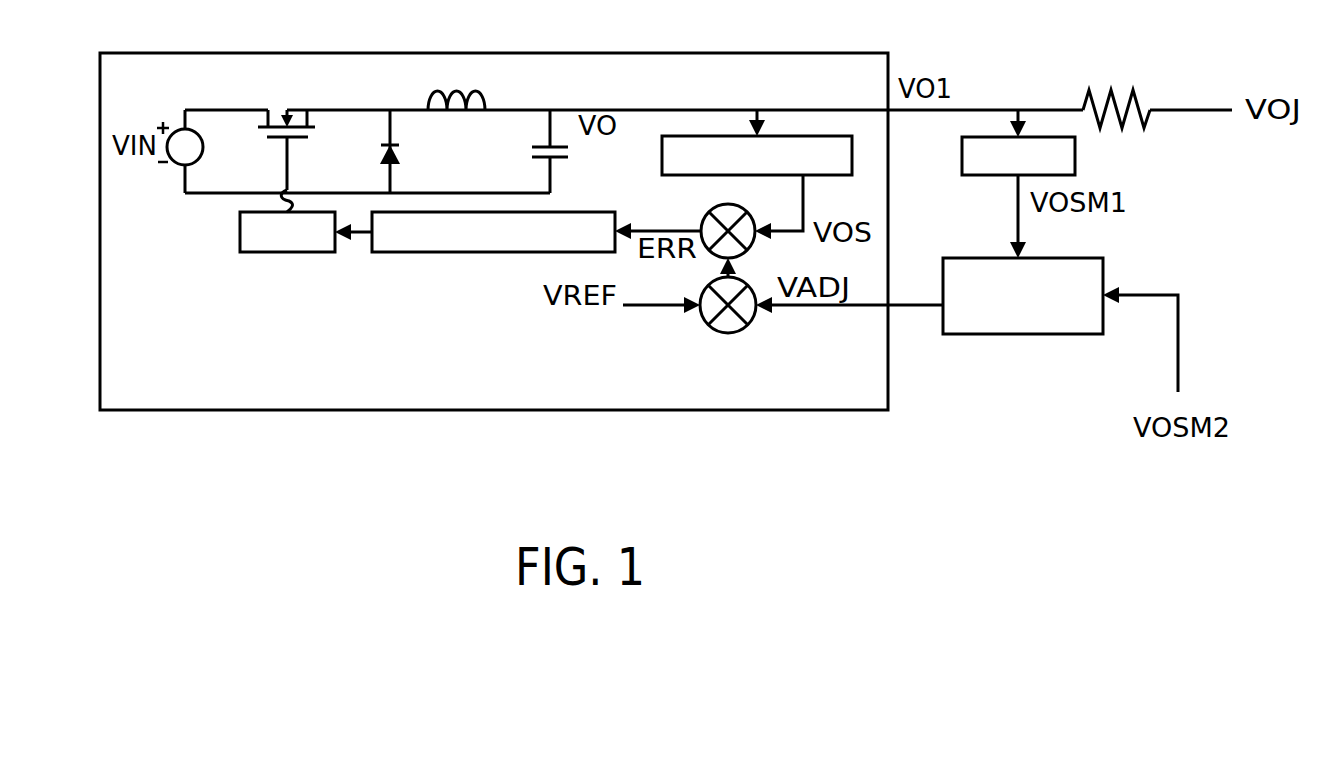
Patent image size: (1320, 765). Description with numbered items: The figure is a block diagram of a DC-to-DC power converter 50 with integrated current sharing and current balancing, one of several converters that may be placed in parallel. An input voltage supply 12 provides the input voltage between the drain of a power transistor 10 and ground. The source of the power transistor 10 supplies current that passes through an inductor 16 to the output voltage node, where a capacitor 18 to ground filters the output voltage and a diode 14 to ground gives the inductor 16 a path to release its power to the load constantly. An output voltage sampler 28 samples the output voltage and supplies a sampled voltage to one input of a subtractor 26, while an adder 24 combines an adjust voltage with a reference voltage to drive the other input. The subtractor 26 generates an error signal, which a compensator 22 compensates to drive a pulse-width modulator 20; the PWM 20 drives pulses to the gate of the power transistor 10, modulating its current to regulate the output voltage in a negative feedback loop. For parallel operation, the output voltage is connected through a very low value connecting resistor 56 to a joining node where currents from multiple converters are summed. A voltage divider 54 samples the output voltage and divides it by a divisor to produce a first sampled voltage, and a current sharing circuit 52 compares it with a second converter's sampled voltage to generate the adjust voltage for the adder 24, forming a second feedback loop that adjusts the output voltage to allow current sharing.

The power transistor 10 is at (315, 127).
The input voltage supply 12 is at (202, 137).
The diode 14 is at (399, 161).
The inductor 16 is at (468, 111).
The capacitor 18 is at (563, 158).
The Pulse-Width-Modulator (PWM) 20 is at (240, 223).
The compensator 22 is at (425, 252).
The adder 24 is at (707, 330).
The subtractor 26 is at (710, 222).
The output voltage sampler 28 is at (832, 175).
The DC-DC power converter 50 is at (197, 358).
The current sharing circuit 52 is at (1103, 272).
The voltage divider 54 is at (961, 158).
The connecting resistor 56 is at (1090, 94).